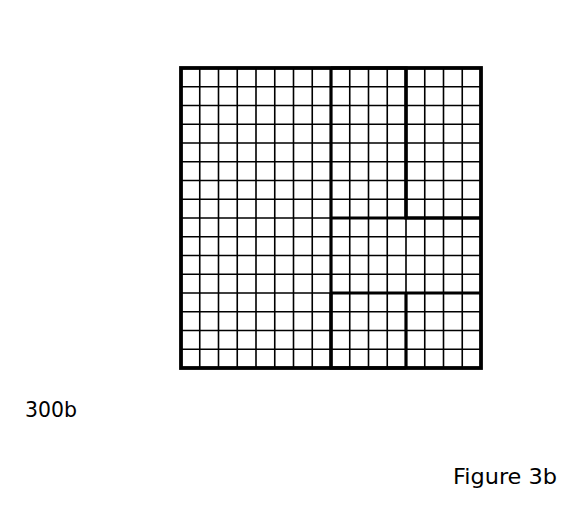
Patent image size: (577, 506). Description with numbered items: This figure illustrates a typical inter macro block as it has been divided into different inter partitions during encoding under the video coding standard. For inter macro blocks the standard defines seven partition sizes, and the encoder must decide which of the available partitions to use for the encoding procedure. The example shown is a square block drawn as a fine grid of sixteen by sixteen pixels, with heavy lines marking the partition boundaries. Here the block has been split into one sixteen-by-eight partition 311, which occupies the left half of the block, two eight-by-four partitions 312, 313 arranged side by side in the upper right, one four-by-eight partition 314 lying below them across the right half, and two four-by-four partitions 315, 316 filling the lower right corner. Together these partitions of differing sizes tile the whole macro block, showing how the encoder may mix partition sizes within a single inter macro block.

The 16×8 partition 311 is at (180, 219).
The 8×4 partition 312 is at (357, 69).
The 8×4 partition 313 is at (483, 107).
The 4×8 partition 314 is at (483, 265).
The 4×4 partition 315 is at (483, 348).
The 4×4 partition 316 is at (340, 370).